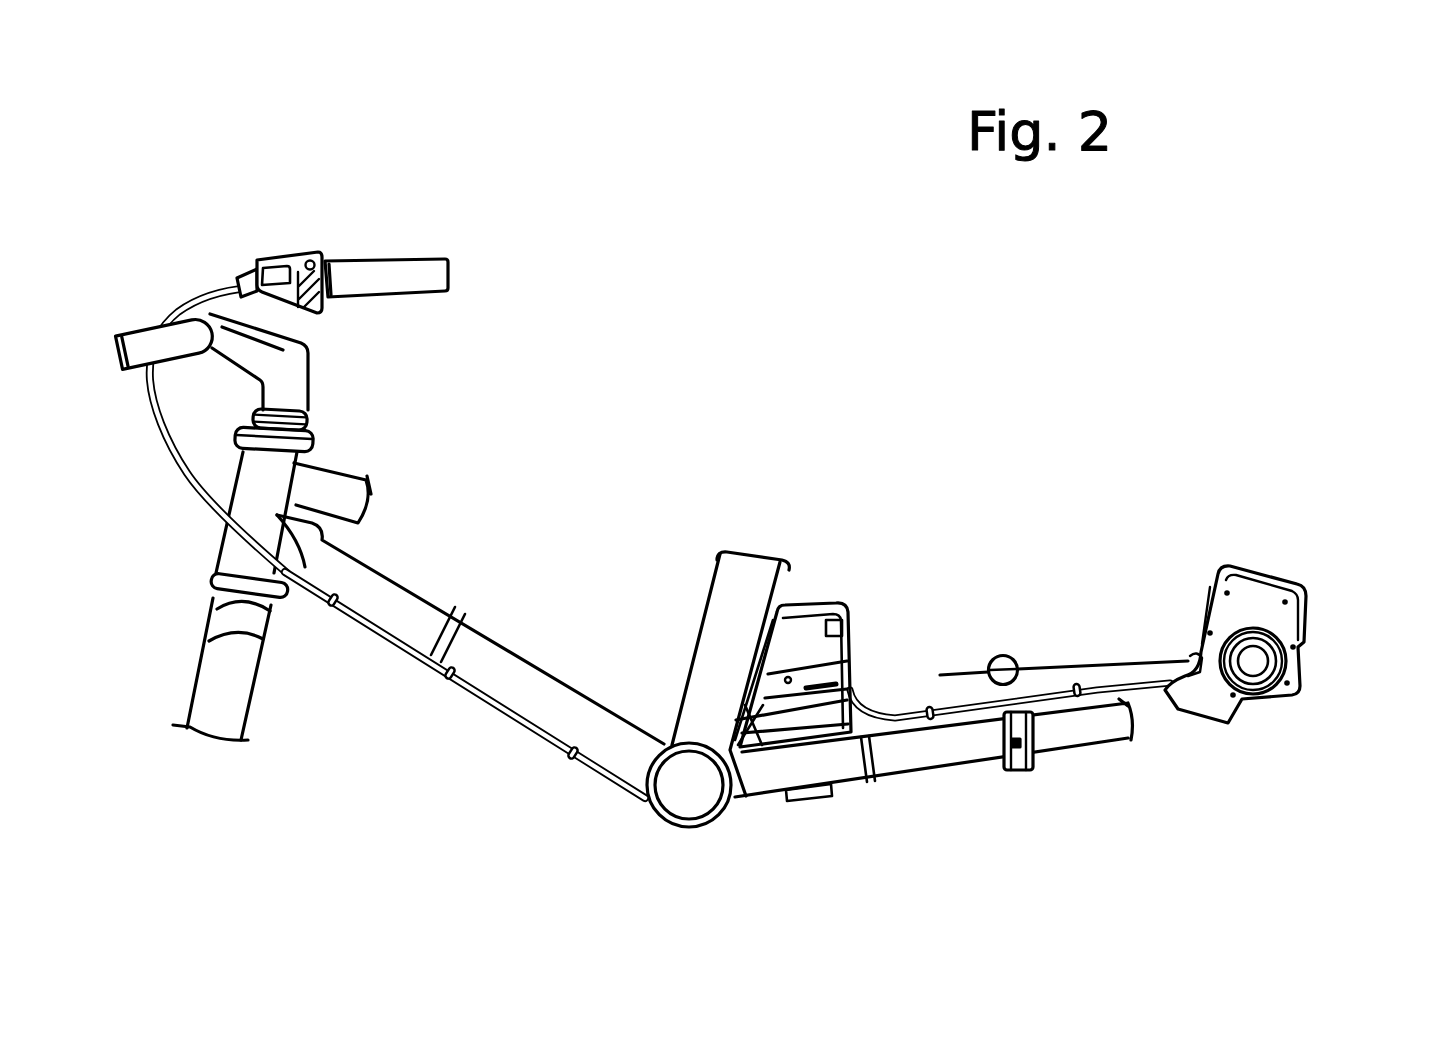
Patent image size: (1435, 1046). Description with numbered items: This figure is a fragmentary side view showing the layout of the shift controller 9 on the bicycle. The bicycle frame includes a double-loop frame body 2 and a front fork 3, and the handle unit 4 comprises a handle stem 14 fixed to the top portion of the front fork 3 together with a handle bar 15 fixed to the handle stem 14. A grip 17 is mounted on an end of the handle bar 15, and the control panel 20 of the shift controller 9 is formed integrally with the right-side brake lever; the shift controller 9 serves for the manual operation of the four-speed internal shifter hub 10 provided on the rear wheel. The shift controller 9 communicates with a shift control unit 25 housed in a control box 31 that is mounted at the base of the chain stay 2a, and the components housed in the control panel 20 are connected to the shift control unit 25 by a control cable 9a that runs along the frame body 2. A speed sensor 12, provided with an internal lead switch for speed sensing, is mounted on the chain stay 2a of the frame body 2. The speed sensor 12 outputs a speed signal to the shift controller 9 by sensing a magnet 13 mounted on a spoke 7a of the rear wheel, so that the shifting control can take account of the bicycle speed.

The frame body 2 is at (583, 670).
The chain stay 2a is at (907, 758).
The front fork 3 is at (236, 688).
The handle unit 4 is at (159, 277).
The spoke 7a is at (1081, 663).
The shift controller 9 is at (300, 248).
The control cable 9a is at (393, 648).
The internal shifter hub 10 is at (1315, 630).
The speed sensor 12 is at (1038, 752).
The magnet 13 is at (1006, 655).
The handle stem 14 is at (298, 381).
The handle bar 15 is at (143, 372).
The grip 17 is at (418, 266).
The control panel 20 is at (281, 237).
The shift control unit 25 is at (857, 620).
The control box 31 is at (855, 660).